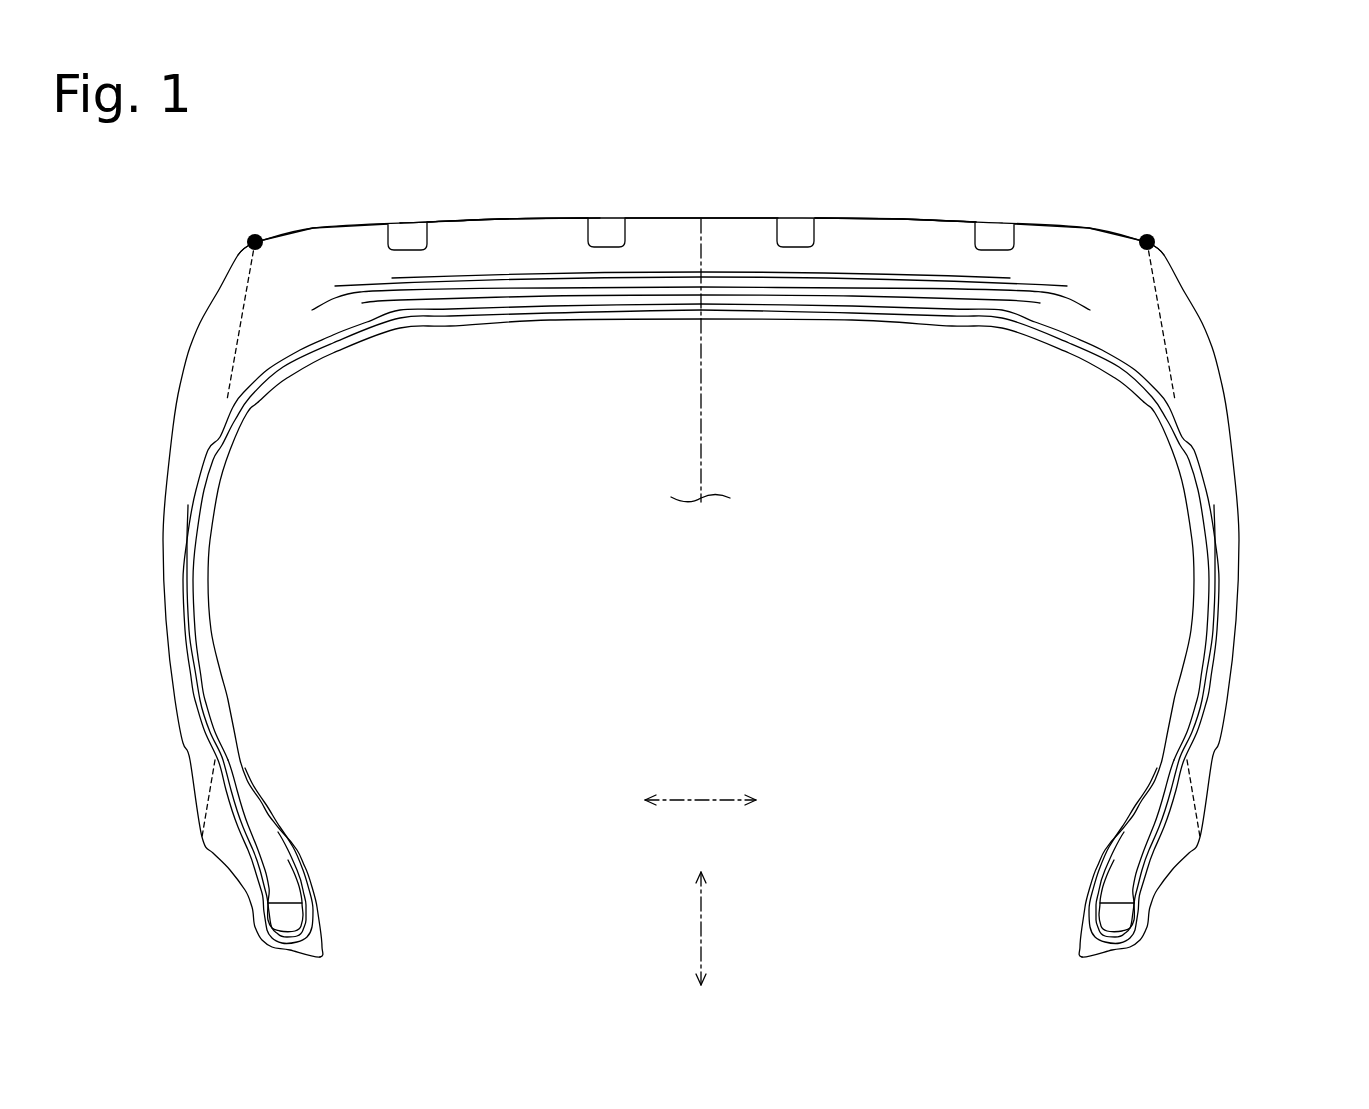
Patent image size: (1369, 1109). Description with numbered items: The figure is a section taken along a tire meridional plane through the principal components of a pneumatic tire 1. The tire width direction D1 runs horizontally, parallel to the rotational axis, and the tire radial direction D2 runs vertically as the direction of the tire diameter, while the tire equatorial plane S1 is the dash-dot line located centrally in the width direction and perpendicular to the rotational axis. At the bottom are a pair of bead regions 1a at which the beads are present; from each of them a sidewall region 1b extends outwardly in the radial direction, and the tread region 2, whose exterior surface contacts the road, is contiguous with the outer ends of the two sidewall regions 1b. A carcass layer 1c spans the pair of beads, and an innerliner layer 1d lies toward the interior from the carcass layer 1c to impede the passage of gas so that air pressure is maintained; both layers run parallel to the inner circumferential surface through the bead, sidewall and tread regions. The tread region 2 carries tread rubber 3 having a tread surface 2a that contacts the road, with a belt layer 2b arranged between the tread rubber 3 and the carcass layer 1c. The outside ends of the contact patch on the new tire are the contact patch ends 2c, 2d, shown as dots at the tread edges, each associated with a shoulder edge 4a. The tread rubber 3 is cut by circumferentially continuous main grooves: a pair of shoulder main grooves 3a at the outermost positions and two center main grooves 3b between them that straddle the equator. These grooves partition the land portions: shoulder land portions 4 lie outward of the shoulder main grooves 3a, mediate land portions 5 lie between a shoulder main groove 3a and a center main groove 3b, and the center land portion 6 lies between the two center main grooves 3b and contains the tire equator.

The pneumatic tire 1 is at (1245, 145).
The bead region 1a is at (213, 932).
The sidewall region 1b is at (138, 518).
The carcass layer 1c is at (553, 306).
The innerliner layer 1d is at (777, 323).
The tread region 2 is at (753, 213).
The tread surface 2a is at (495, 220).
The belt layer 2b is at (893, 278).
The contact patch end 2c is at (253, 236).
The contact patch end 2d is at (1149, 236).
The tread rubber 3 is at (920, 223).
The shoulder main groove 3a is at (407, 226).
The center main groove 3b is at (603, 218).
The shoulder land portion 4 is at (318, 228).
The shoulder edge 4a is at (247, 245).
The mediate land portion 5 is at (527, 216).
The center land portion 6 is at (668, 213).
The tire equatorial plane S1 is at (700, 458).
The tire width direction D1 is at (700, 812).
The tire radial direction D2 is at (718, 928).